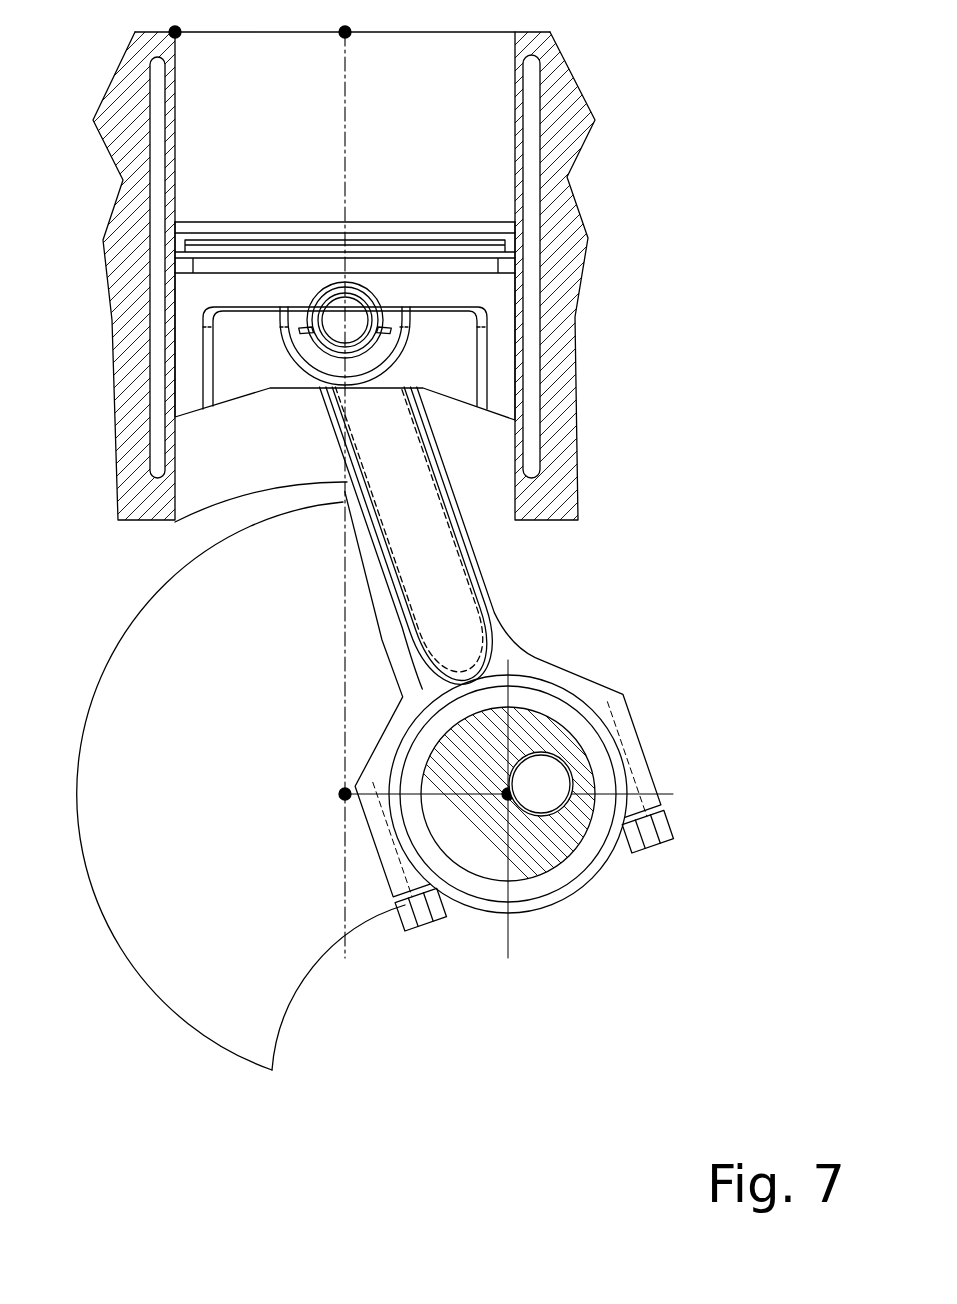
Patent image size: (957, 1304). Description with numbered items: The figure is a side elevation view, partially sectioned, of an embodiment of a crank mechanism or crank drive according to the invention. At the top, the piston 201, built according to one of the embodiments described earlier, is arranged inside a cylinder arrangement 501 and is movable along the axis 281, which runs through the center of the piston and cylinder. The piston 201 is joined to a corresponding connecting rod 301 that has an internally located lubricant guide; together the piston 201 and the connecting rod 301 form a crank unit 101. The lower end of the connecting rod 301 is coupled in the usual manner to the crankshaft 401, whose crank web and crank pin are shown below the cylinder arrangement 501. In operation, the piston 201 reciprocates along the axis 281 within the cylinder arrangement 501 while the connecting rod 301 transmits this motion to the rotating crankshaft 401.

The crank unit 101 is at (622, 606).
The piston 201 is at (517, 298).
The axis 281 is at (348, 65).
The connecting rod 301 is at (542, 658).
The crankshaft 401 is at (547, 870).
The cylinder arrangement 501 is at (580, 150).